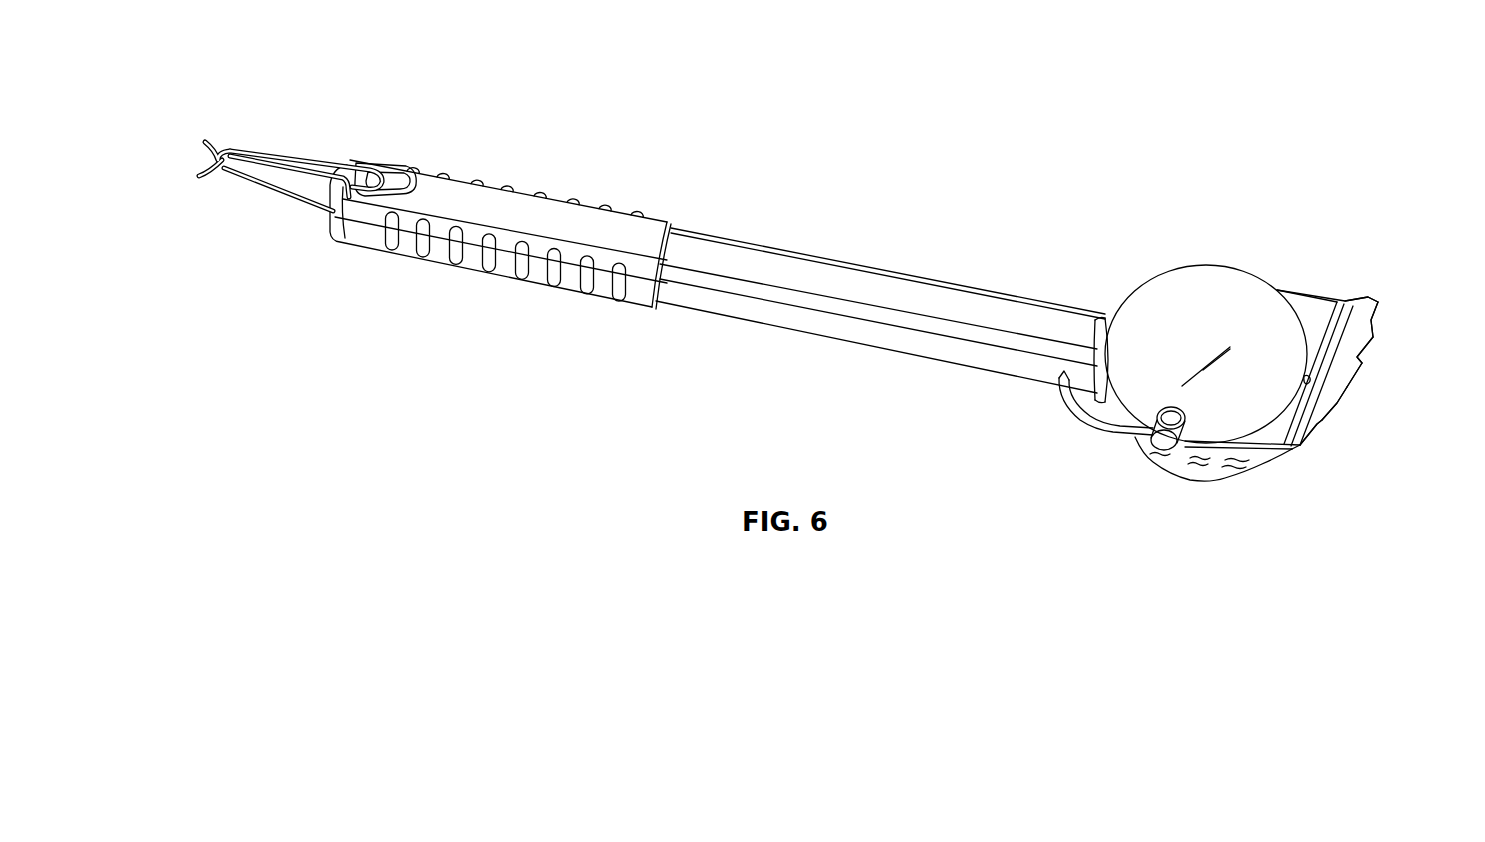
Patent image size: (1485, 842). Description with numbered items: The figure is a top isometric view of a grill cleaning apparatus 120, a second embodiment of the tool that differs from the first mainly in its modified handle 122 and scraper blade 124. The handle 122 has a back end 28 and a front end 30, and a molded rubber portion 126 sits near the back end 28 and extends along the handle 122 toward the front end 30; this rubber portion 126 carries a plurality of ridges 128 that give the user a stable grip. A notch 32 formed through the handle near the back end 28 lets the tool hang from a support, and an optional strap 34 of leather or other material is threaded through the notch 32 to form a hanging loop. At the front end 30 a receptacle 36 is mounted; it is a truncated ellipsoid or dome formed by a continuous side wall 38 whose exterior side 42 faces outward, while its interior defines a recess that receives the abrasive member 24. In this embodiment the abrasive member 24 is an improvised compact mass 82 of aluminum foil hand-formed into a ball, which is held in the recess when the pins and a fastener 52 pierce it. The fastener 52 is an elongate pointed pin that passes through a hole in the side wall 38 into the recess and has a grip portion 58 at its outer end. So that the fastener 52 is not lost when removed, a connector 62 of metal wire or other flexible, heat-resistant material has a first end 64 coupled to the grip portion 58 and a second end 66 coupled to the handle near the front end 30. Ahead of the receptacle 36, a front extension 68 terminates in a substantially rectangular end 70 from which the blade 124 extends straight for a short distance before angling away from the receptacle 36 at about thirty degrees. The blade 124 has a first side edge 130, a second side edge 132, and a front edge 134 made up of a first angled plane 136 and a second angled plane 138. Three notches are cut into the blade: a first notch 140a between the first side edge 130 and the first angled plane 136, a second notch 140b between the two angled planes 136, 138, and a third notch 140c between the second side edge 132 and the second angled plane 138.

The grill cleaning apparatus 120 is at (226, 68).
The strap 34 is at (284, 152).
The notch 32 is at (388, 166).
The back end 28 is at (323, 218).
The molded rubber portion 126 is at (518, 203).
The ridges 128 is at (515, 264).
The handle 122 is at (733, 234).
The front end 30 is at (1103, 343).
The receptacle 36 is at (1142, 282).
The side wall 38 is at (1185, 263).
The exterior side 42 is at (1206, 343).
The second end 66 is at (1060, 376).
The connector 62 is at (1067, 412).
The fastener 52 is at (1150, 450).
The grip portion 58 is at (1157, 458).
The compact mass 82 is at (1197, 470).
The first end 64 is at (1227, 474).
The abrasive member 24 is at (1213, 487).
The front extension 68 is at (1285, 291).
The first side edge 130 is at (1362, 296).
The rectangular end 70 is at (1305, 382).
The first notch 140a is at (1369, 299).
The scraper blade 124 is at (1380, 312).
The first angled plane 136 is at (1374, 331).
The second notch 140b is at (1363, 353).
The front edge 134 is at (1349, 386).
The second angled plane 138 is at (1340, 403).
The third notch 140c is at (1318, 426).
The second side edge 132 is at (1300, 448).